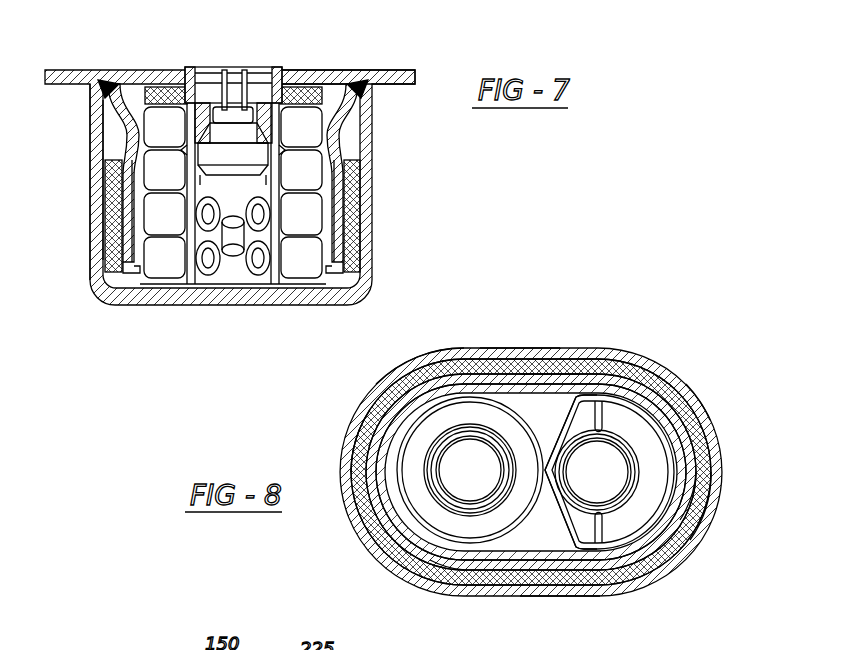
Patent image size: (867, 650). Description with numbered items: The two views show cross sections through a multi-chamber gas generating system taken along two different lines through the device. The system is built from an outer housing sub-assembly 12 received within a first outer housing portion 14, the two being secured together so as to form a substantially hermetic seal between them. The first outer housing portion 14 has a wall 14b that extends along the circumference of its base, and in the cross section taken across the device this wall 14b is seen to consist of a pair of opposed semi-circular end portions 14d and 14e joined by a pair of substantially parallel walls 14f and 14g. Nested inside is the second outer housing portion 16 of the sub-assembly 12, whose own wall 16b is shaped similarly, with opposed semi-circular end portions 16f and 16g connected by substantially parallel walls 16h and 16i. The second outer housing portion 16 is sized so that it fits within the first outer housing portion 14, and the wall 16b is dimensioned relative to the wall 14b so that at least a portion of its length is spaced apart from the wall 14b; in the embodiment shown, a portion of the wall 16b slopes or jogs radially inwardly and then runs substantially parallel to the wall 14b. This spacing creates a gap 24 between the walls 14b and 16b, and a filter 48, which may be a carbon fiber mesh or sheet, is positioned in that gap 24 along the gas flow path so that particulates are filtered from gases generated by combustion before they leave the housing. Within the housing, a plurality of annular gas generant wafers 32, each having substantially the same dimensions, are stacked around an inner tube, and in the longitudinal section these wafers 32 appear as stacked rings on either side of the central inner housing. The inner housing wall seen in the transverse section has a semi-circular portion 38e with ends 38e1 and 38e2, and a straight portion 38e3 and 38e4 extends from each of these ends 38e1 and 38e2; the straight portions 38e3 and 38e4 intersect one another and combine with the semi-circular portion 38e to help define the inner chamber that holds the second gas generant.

In FIG. 7, the outer housing sub-assembly 12 is at (332, 69).
In FIG. 7, the first outer housing portion 14 is at (75, 70).
In FIG. 7, the wall 14b is at (90, 238).
In FIG. 8, the wall 14b is at (665, 365).
In FIG. 8, the semi-circular end portion 14d is at (367, 397).
In FIG. 8, the semi-circular end portion 14e is at (697, 400).
In FIG. 8, the parallel wall 14f is at (522, 348).
In FIG. 8, the parallel wall 14g is at (562, 598).
In FIG. 7, the second outer housing portion 16 is at (360, 130).
In FIG. 8, the second outer housing portion 16 is at (436, 388).
In FIG. 7, the wall 16b is at (123, 253).
In FIG. 8, the wall 16b is at (712, 484).
In FIG. 8, the semi-circular end portion 16f is at (690, 490).
In FIG. 8, the semi-circular end portion 16g is at (360, 487).
In FIG. 8, the parallel wall 16h is at (553, 390).
In FIG. 8, the parallel wall 16i is at (457, 567).
In FIG. 7, the gap 24 is at (107, 152).
In FIG. 7, the gas generant wafers 32 is at (300, 168).
In FIG. 8, the semi-circular portion 38e is at (673, 445).
In FIG. 8, the end 38e1 is at (575, 392).
In FIG. 8, the end 38e2 is at (600, 556).
In FIG. 8, the straight portion 38e3 is at (562, 425).
In FIG. 8, the straight portion 38e4 is at (562, 517).
In FIG. 7, the filter 48 is at (350, 225).
In FIG. 8, the filter 48 is at (402, 558).